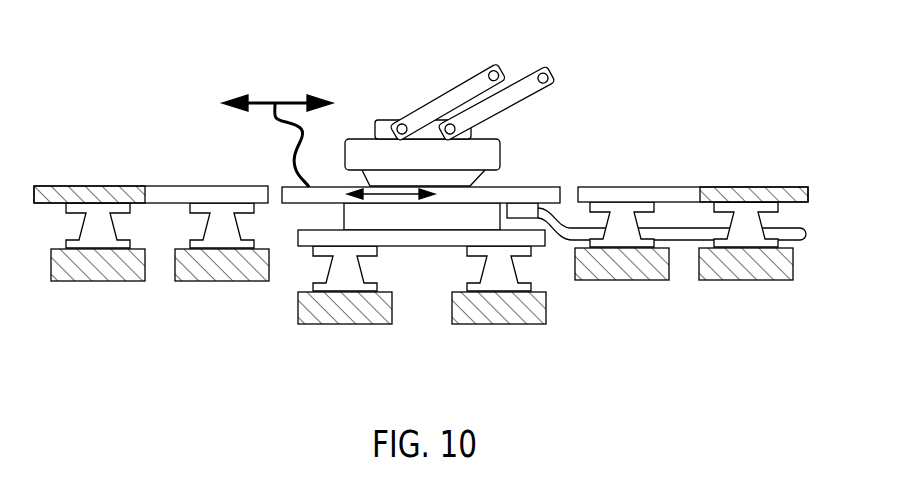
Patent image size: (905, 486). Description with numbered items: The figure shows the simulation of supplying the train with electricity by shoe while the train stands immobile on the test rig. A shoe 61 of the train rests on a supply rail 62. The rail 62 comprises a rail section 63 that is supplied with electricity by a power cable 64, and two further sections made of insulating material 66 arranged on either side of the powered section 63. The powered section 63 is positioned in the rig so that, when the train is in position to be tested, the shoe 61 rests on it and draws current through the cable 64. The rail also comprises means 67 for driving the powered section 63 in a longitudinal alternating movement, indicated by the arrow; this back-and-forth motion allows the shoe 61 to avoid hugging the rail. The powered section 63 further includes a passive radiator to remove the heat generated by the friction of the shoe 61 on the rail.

The shoe 61 is at (432, 102).
The rail 62 is at (88, 186).
The rail section 63 is at (528, 187).
The power cable 64 is at (558, 218).
The sections made of insulating material 66 is at (197, 194).
The means for driving the powered section 67 is at (263, 102).